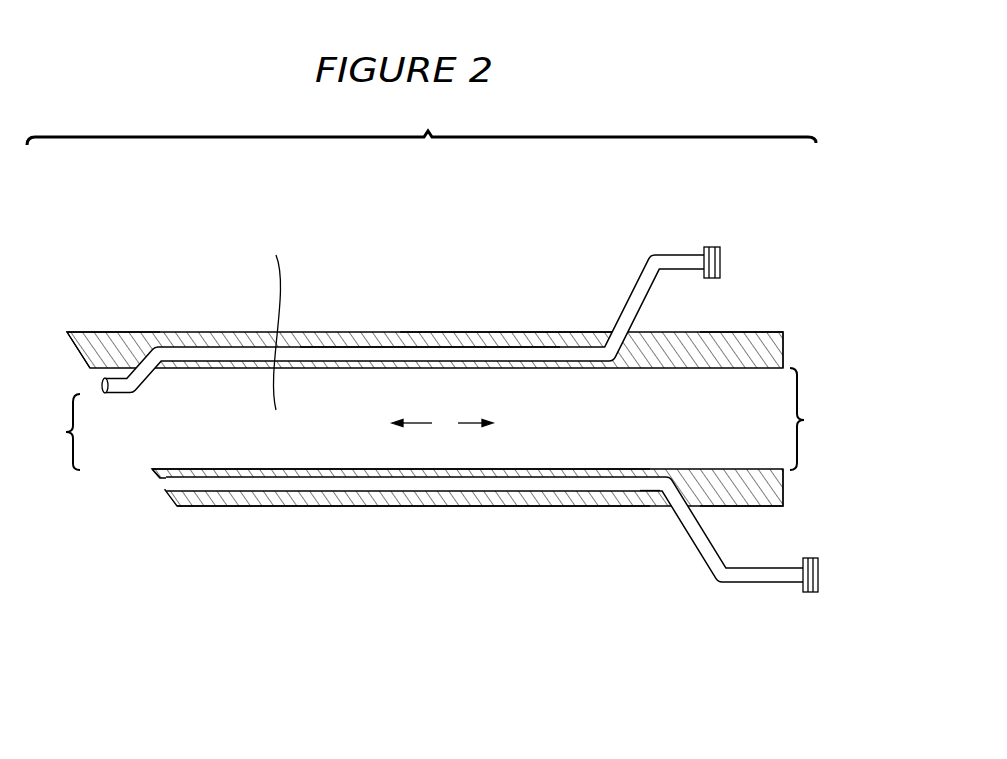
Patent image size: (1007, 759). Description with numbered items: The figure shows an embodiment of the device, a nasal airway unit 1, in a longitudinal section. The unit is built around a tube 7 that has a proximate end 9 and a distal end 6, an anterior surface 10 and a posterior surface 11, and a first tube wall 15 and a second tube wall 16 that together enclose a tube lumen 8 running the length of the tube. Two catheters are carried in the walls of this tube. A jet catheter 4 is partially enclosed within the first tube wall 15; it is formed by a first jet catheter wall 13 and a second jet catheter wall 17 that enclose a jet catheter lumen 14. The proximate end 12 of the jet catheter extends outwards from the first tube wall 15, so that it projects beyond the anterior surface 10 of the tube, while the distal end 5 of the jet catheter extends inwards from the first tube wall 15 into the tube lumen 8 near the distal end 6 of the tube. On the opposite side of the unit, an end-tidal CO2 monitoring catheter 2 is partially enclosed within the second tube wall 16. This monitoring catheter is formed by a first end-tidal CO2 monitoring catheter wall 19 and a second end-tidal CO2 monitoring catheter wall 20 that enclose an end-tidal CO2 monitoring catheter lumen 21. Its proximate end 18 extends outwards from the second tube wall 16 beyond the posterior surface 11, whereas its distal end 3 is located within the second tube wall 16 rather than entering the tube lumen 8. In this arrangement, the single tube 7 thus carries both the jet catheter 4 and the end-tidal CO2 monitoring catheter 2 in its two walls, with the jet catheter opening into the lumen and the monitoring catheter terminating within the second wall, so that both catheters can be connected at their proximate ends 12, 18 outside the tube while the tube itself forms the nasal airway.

The nasal airway unit 1 is at (421, 126).
The end-tidal CO2 monitoring catheter 2 is at (496, 567).
The distal end of end-tidal CO2 monitoring catheter 3 is at (145, 487).
The jet catheter 4 is at (384, 304).
The distal end of jet catheter 5 is at (100, 383).
The distal end of tube 6 is at (64, 432).
The tube 7 is at (277, 320).
The tube lumen 8 is at (442, 422).
The proximate end of tube 9 is at (805, 419).
The anterior surface 10 is at (425, 305).
The posterior surface 11 is at (474, 492).
The proximate end of jet catheter 12 is at (716, 247).
The first jet catheter wall 13 is at (512, 346).
The jet catheter lumen 14 is at (157, 352).
The first tube wall 15 is at (770, 332).
The second tube wall 16 is at (770, 506).
The second jet catheter wall 17 is at (548, 352).
The proximate end of end-tidal CO2 monitoring catheter 18 is at (812, 594).
The first end-tidal CO2 monitoring catheter wall 19 is at (325, 469).
The second end-tidal CO2 monitoring catheter wall 20 is at (382, 507).
The end-tidal CO2 monitoring catheter lumen 21 is at (662, 492).